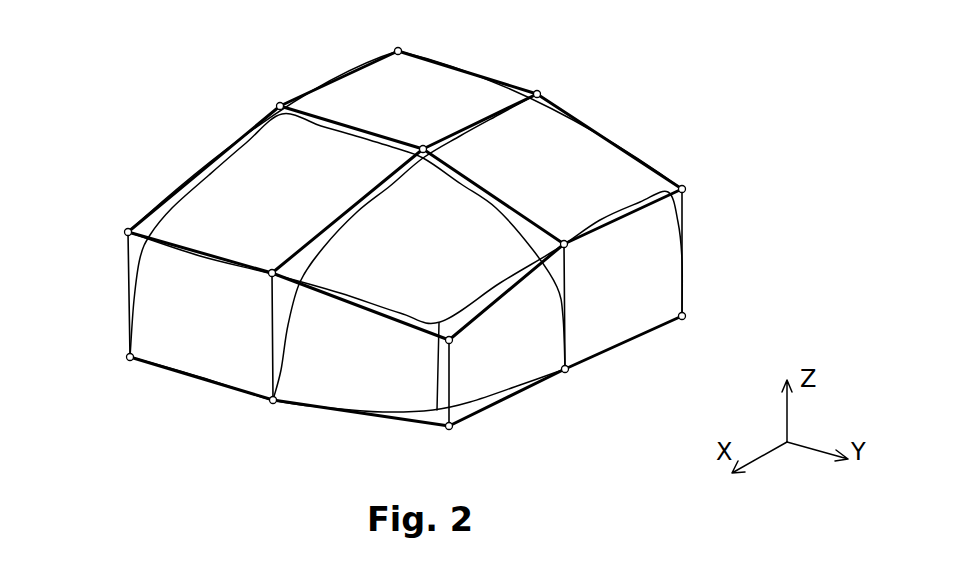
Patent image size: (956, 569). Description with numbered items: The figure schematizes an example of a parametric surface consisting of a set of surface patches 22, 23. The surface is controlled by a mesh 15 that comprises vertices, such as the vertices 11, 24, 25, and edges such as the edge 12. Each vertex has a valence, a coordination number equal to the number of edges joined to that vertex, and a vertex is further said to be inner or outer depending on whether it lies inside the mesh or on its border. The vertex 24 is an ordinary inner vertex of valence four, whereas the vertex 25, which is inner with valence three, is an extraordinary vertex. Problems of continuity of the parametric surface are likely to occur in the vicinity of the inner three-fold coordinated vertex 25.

The vertex 11 is at (538, 93).
The edge 12 is at (158, 212).
The mesh 15 is at (625, 217).
The surface patch 22 is at (242, 196).
The surface patch 23 is at (362, 103).
The vertex 24 is at (423, 148).
The vertex 25 is at (456, 341).